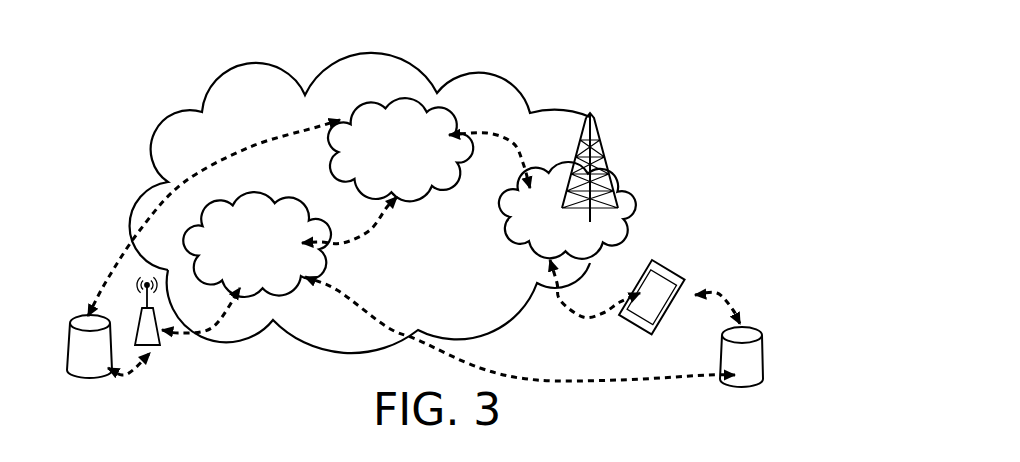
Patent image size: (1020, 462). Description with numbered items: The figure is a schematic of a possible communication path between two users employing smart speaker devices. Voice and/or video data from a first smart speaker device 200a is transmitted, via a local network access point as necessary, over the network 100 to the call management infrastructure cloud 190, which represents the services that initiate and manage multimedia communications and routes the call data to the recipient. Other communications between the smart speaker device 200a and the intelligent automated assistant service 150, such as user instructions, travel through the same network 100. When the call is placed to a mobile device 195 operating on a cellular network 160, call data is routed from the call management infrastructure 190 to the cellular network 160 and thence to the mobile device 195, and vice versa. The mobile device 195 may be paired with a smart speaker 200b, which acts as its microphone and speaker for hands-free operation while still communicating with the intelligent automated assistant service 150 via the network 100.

The network 100 is at (398, 296).
The intelligent automated assistant service 150 is at (232, 258).
The cellular network 160 is at (524, 244).
The call management infrastructure cloud 190 is at (366, 158).
The mobile device 195 is at (680, 275).
The first smart speaker device 200a is at (92, 365).
The smart speaker 200b is at (760, 377).